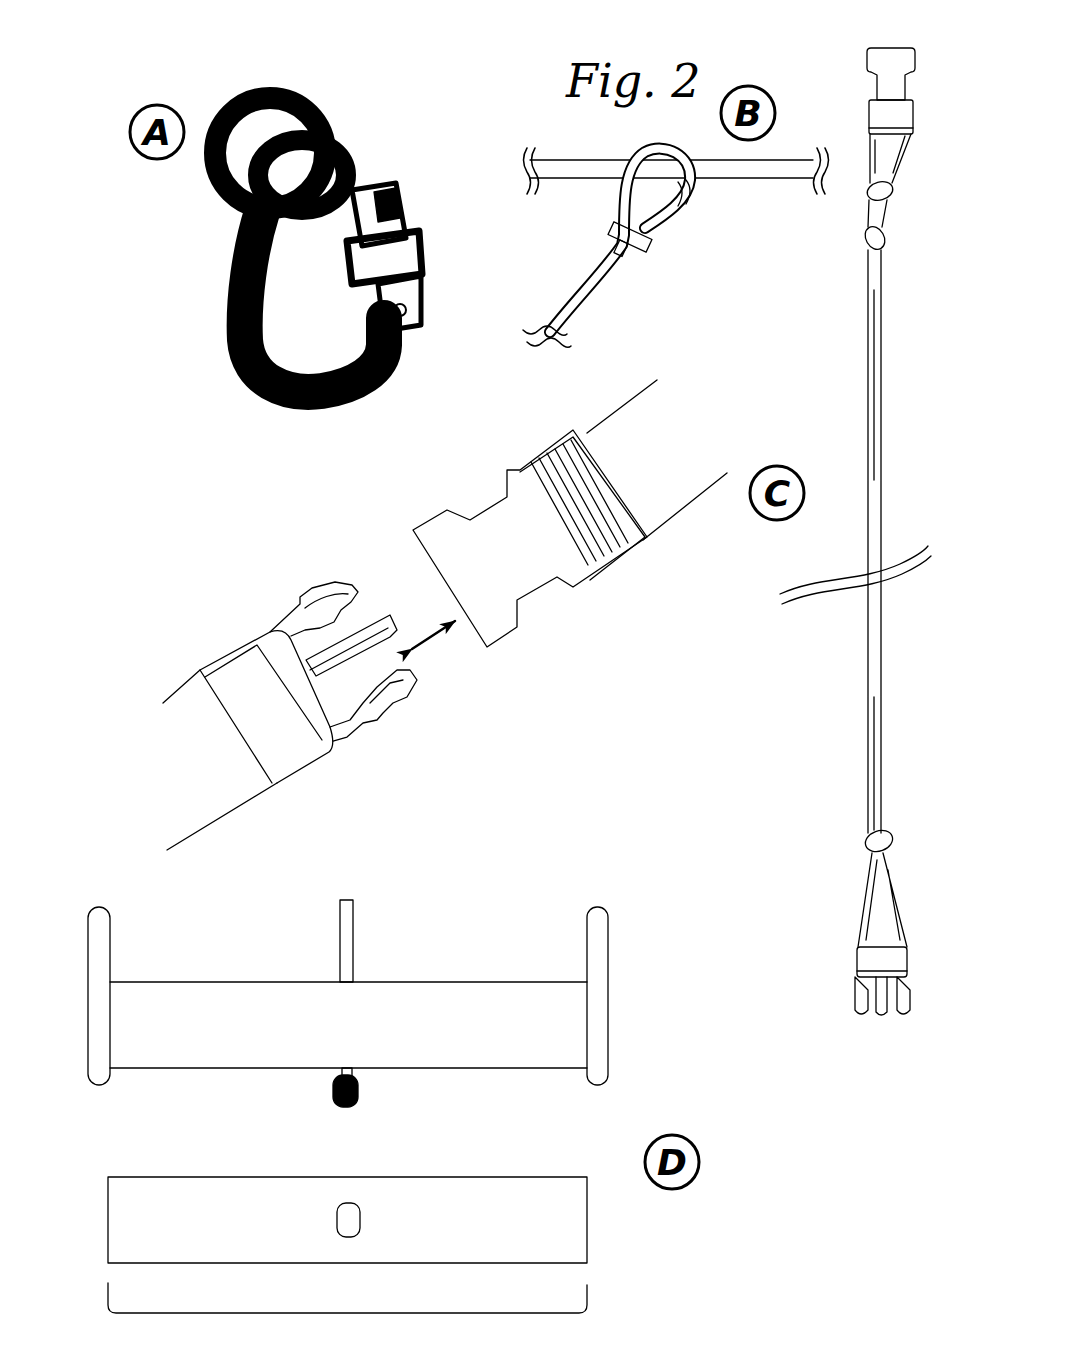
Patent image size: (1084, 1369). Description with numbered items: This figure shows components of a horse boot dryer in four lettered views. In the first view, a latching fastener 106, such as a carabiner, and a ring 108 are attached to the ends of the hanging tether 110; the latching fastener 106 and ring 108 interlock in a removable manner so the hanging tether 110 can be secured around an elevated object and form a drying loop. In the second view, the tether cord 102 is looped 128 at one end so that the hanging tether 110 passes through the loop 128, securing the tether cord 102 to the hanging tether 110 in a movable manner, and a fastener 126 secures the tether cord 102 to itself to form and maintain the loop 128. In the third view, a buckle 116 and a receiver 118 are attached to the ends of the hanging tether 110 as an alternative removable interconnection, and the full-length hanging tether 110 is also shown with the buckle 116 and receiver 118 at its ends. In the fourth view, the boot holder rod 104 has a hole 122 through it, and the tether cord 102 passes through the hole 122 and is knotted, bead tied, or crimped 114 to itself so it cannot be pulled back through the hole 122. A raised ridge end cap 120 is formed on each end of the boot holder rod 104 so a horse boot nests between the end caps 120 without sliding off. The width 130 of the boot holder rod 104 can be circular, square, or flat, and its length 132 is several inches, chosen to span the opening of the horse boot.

The tether cord 102 is at (580, 290).
The boot holder rod 104 is at (522, 995).
The latching fastener 106 is at (253, 307).
The ring 108 is at (222, 124).
The hanging tether 110 is at (583, 168).
The crimping 114 is at (357, 1087).
The buckle 116 is at (270, 637).
The receiver 118 is at (453, 527).
The raised ridge end cap 120 is at (100, 920).
The hole 122 is at (347, 1217).
The fastener 126 is at (640, 240).
The loop 128 is at (658, 197).
The width 130 is at (100, 1207).
The length 132 is at (588, 1293).